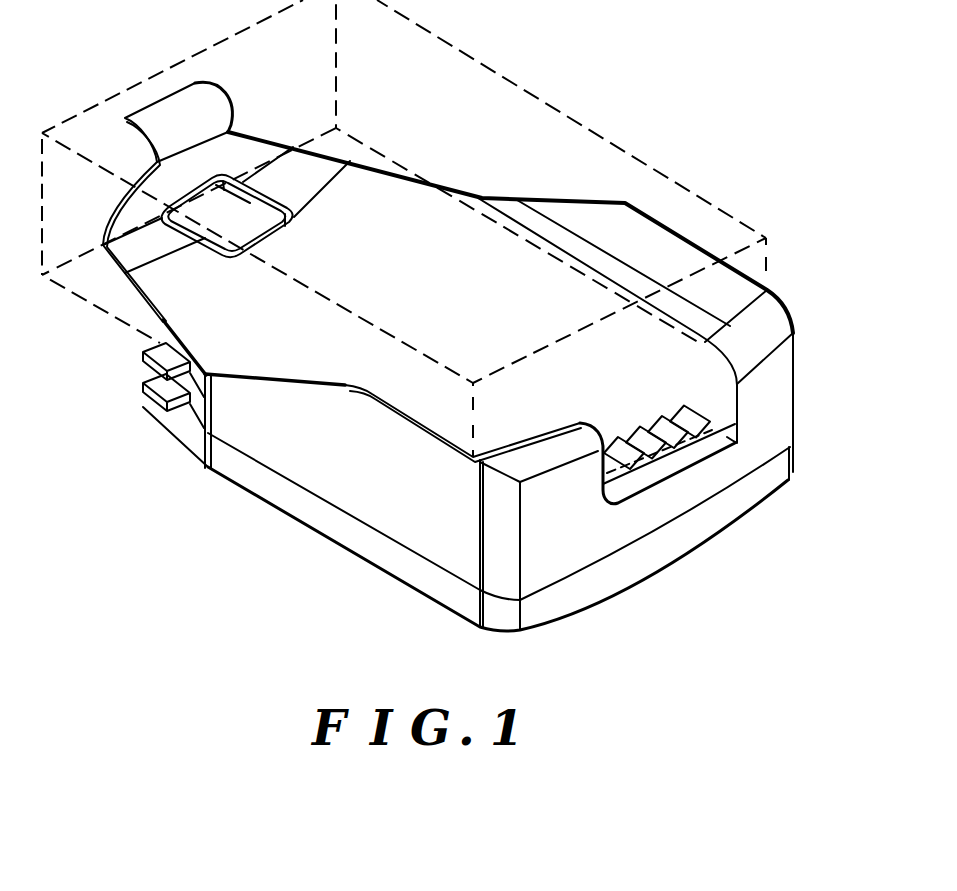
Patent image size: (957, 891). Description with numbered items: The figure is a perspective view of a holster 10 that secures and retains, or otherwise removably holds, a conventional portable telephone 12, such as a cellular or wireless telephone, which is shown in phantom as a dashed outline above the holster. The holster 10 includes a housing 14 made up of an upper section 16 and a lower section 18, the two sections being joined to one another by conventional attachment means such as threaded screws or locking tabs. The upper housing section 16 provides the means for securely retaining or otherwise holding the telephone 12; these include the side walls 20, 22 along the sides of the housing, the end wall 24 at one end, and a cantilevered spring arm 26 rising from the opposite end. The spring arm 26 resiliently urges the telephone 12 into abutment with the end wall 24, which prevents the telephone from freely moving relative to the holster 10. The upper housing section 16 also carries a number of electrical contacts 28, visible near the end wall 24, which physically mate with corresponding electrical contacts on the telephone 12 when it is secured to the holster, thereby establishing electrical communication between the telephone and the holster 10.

The holster 10 is at (220, 562).
The portable telephone 12 is at (408, 47).
The housing 14 is at (434, 611).
The upper section 16 is at (772, 395).
The lower section 18 is at (660, 570).
The side wall 20 is at (597, 218).
The side wall 22 is at (387, 503).
The end wall 24 is at (767, 330).
The cantilevered spring arm 26 is at (208, 102).
The electrical contacts 28 is at (664, 418).